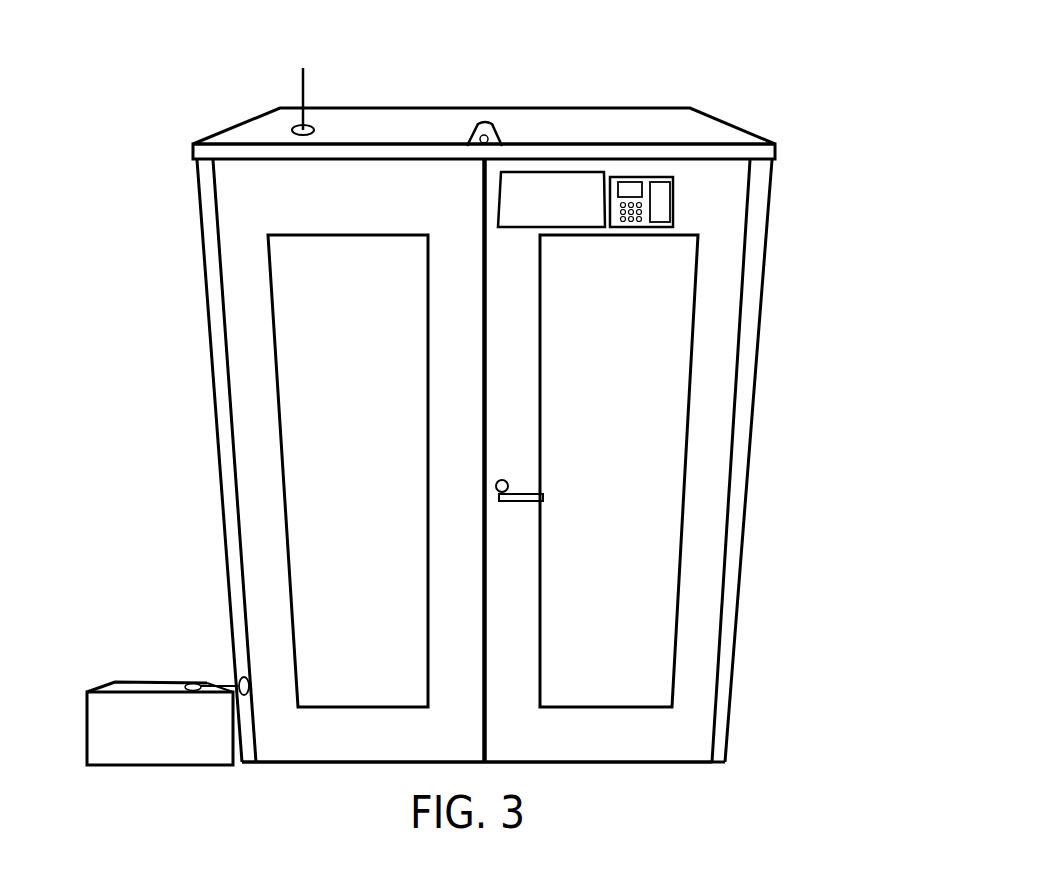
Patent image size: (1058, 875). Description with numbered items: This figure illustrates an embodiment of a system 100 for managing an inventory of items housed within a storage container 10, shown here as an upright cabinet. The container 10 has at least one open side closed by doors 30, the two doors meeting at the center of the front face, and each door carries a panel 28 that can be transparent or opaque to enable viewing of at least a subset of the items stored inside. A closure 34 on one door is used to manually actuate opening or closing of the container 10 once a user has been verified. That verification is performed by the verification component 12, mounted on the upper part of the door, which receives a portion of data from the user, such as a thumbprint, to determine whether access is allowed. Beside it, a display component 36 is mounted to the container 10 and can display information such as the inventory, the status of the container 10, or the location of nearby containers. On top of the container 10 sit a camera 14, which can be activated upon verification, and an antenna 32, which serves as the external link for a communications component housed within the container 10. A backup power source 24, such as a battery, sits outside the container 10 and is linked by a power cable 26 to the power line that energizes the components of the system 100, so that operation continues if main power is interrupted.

The system 100 is at (186, 126).
The storage container 10 is at (196, 202).
The verification component 12 is at (661, 200).
The camera 14 is at (493, 132).
The backup power source 24 is at (160, 724).
The power cable 26 is at (237, 687).
The panels 28 is at (293, 382).
The doors 30 is at (243, 322).
The antenna 32 is at (305, 97).
The closure 34 is at (510, 493).
The display component 36 is at (583, 180).